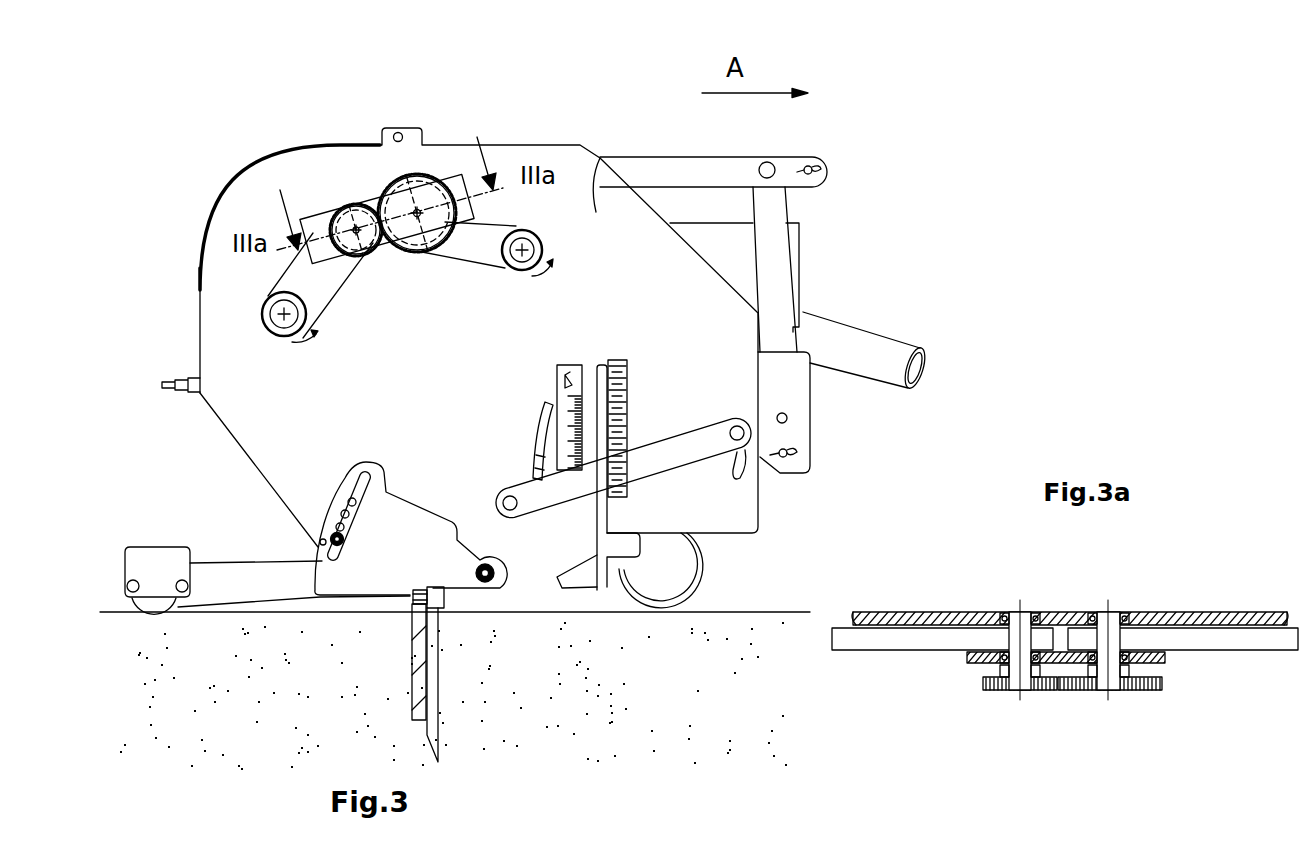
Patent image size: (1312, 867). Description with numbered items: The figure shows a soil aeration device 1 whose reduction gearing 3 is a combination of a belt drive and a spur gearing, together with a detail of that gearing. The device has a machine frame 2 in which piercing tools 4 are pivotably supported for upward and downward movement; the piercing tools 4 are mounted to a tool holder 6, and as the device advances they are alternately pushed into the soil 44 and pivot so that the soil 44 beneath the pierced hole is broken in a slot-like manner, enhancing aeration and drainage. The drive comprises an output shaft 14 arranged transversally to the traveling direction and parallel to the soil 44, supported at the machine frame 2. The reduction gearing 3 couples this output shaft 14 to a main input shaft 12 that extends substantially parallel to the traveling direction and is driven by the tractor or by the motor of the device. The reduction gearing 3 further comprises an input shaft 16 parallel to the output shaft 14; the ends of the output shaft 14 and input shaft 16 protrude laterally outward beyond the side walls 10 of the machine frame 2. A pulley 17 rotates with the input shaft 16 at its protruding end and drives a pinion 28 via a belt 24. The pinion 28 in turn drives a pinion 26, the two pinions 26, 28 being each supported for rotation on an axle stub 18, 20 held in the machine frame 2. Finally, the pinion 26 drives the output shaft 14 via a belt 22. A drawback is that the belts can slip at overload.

In FIG. 3, the soil aeration device 1 is at (135, 145).
In FIG. 3, the machine frame 2 is at (600, 158).
In FIG. 3A, the machine frame 2 is at (1205, 612).
In FIG. 3, the reduction gearing 3 is at (353, 187).
In FIG. 3, the piercing tools 4 is at (437, 720).
In FIG. 3, the tool holder 6 is at (445, 600).
In FIG. 3, the side walls 10 is at (581, 333).
In FIG. 3, the main input shaft 12 is at (876, 352).
In FIG. 3, the output shaft 14 is at (543, 242).
In FIG. 3, the input shaft 16 is at (270, 308).
In FIG. 3, the pulley 17 is at (200, 268).
In FIG. 3, the axle stub 18 is at (417, 228).
In FIG. 3A, the axle stub 18 is at (1112, 605).
In FIG. 3, the axle stub 20 is at (368, 243).
In FIG. 3A, the axle stub 20 is at (1012, 605).
In FIG. 3, the belt 22 is at (478, 263).
In FIG. 3A, the belt 22 is at (1267, 650).
In FIG. 3, the belt 24 is at (330, 293).
In FIG. 3A, the belt 24 is at (886, 650).
In FIG. 3, the pinion 26 is at (417, 186).
In FIG. 3A, the pinion 26 is at (1140, 690).
In FIG. 3, the pinion 28 is at (343, 205).
In FIG. 3A, the pinion 28 is at (987, 690).
In FIG. 3, the soil 44 is at (740, 712).